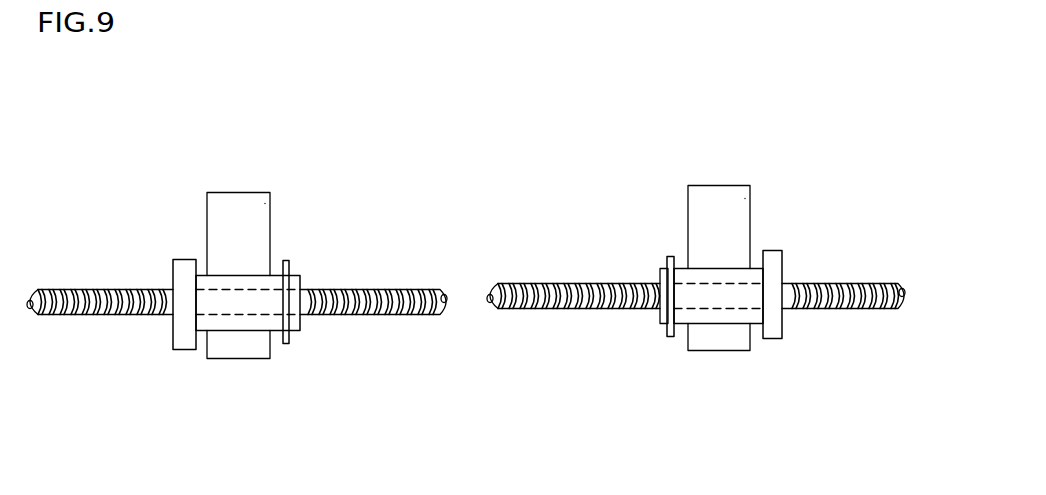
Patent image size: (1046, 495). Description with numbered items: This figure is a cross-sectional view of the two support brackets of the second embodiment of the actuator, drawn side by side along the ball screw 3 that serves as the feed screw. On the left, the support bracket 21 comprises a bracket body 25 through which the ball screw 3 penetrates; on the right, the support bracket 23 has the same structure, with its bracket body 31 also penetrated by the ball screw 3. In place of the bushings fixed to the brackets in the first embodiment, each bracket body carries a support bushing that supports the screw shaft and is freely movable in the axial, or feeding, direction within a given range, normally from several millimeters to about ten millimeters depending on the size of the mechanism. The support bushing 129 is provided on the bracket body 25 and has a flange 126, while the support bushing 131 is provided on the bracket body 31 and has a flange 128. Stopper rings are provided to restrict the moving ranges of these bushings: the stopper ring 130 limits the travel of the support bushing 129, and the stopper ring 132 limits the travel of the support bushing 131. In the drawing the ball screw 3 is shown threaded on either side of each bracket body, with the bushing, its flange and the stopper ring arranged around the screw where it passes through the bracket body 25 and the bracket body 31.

The ball screw 3 is at (390, 318).
The support bracket 21 is at (222, 192).
The bracket body 25 is at (262, 215).
The flange 126 is at (188, 347).
The support bushing 129 is at (185, 258).
The stopper ring 130 is at (291, 268).
The support bracket 23 is at (703, 185).
The bracket body 31 is at (740, 202).
The flange 128 is at (775, 340).
The stopper ring 132 is at (671, 257).
The support bushing 131 is at (784, 262).